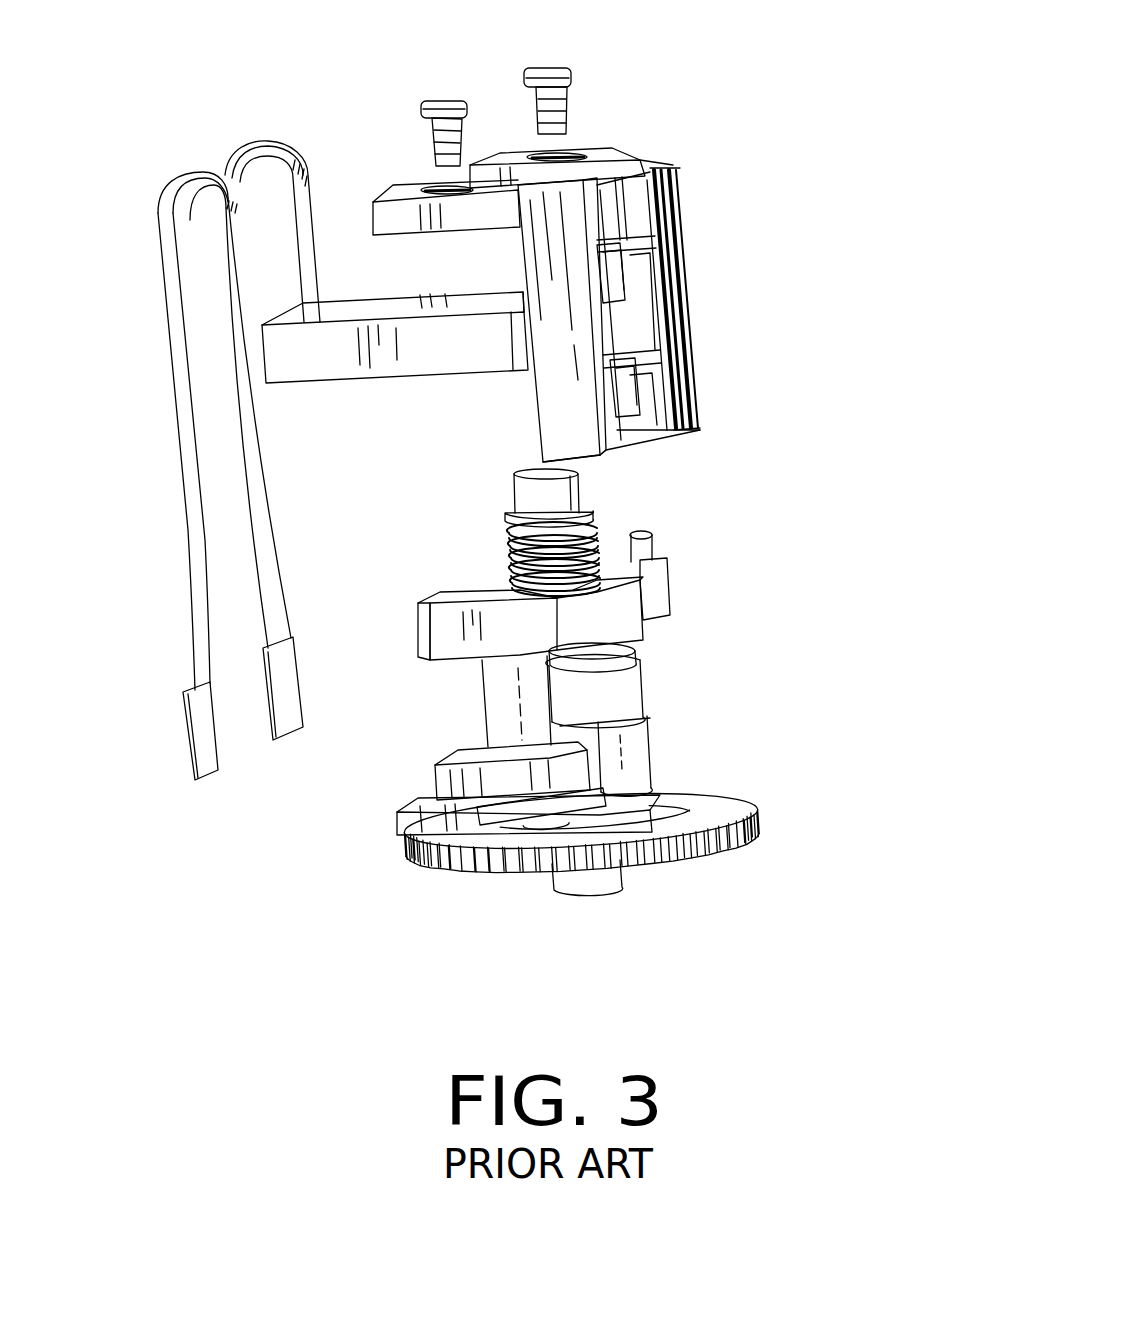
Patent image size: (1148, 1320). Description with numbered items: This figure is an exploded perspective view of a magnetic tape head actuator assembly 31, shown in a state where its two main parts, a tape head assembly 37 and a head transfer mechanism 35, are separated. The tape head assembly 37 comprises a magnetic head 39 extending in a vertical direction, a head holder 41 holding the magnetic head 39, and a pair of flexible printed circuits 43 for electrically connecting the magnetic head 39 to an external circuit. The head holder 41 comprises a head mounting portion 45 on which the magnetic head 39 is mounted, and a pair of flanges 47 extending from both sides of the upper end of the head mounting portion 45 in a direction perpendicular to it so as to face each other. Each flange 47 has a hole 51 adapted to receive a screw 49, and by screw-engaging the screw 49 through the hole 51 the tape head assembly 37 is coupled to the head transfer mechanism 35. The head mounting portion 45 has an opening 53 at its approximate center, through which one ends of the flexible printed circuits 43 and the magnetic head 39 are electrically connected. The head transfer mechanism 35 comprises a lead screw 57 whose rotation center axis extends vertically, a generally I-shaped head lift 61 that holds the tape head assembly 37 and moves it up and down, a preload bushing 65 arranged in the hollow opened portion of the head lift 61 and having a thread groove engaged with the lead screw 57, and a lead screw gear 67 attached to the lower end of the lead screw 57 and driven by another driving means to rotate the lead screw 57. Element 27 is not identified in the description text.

The nut 27 is at (632, 650).
The magnetic tape head actuator assembly 31 is at (294, 850).
The head transfer mechanism 35 is at (765, 751).
The tape head assembly 37 is at (772, 234).
The magnetic head 39 is at (688, 300).
The head holder 41 is at (545, 415).
The flexible printed circuits 43 is at (273, 142).
The head mounting portion 45 is at (533, 252).
The flanges 47 is at (383, 197).
The screw 49 is at (440, 100).
The hole 51 is at (440, 188).
The opening 53 is at (617, 237).
The lead screw 57 is at (600, 565).
The head lift 61 is at (667, 590).
The preload bushing 65 is at (630, 685).
The lead screw gear 67 is at (752, 838).